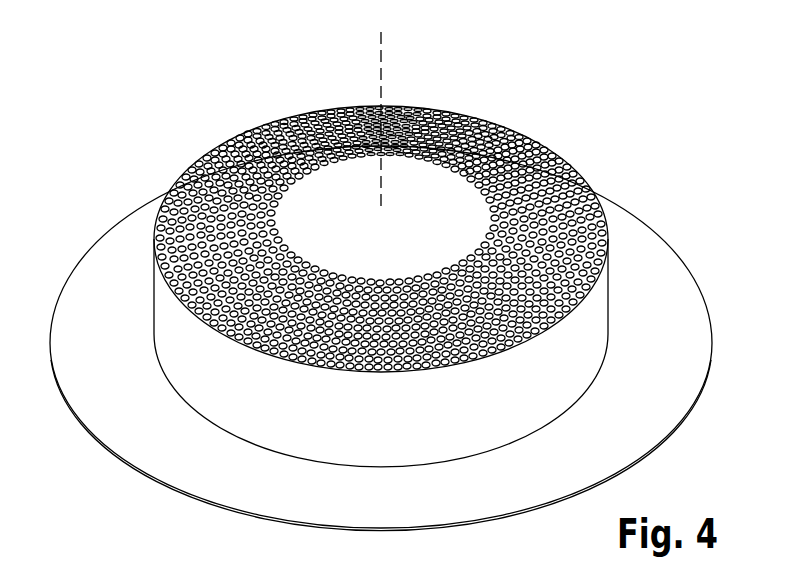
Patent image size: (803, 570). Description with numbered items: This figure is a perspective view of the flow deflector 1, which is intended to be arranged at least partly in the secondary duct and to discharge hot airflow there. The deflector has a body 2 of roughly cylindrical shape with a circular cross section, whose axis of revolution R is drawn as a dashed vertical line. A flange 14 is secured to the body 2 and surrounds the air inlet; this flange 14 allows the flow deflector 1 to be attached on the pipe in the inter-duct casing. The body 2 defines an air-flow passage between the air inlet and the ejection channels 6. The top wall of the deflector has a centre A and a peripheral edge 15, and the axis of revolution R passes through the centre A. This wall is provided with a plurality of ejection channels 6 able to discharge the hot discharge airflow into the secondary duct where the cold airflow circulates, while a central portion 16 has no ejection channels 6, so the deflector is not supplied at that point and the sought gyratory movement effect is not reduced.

The flow deflector 1 is at (404, 281).
The body 2 is at (573, 363).
The ejection channels 6 is at (551, 154).
The flange 14 is at (677, 313).
The peripheral edge 15 is at (582, 178).
The central portion 16 is at (433, 190).
The axis of revolution R is at (381, 50).
The centre A is at (381, 210).